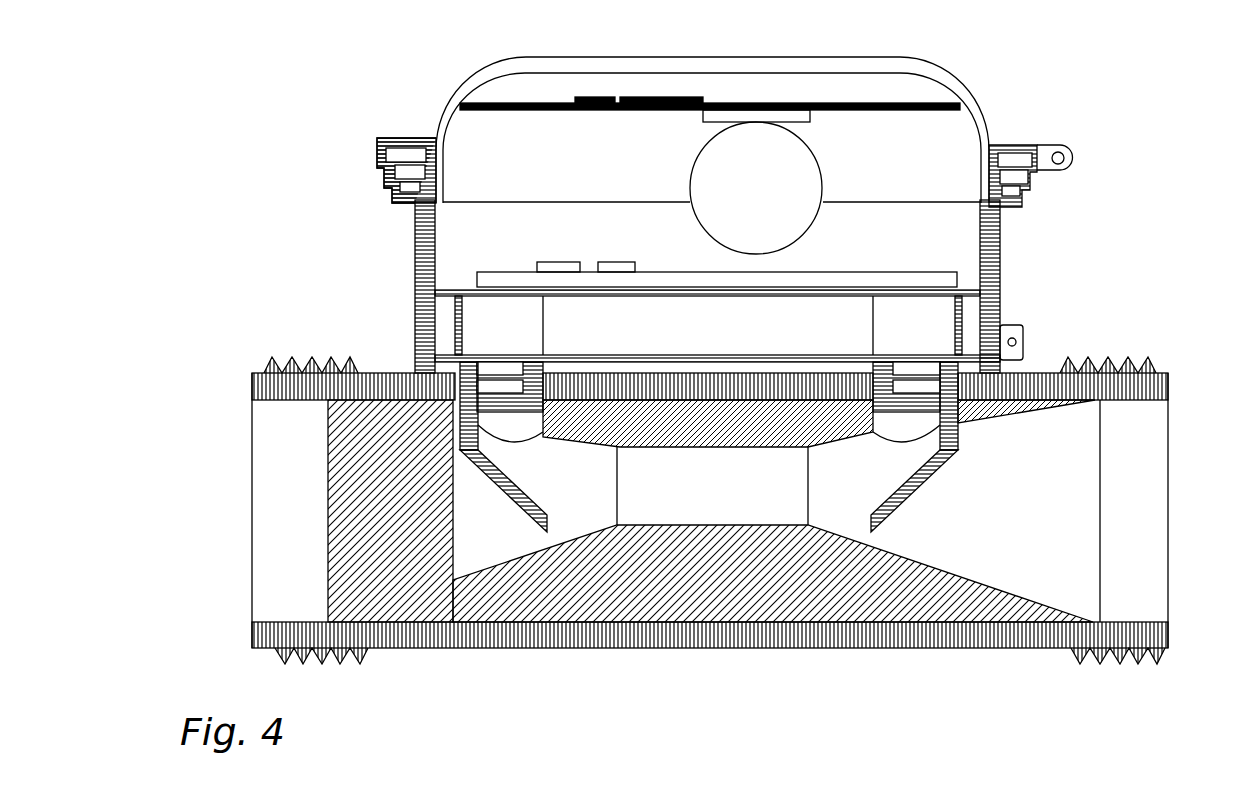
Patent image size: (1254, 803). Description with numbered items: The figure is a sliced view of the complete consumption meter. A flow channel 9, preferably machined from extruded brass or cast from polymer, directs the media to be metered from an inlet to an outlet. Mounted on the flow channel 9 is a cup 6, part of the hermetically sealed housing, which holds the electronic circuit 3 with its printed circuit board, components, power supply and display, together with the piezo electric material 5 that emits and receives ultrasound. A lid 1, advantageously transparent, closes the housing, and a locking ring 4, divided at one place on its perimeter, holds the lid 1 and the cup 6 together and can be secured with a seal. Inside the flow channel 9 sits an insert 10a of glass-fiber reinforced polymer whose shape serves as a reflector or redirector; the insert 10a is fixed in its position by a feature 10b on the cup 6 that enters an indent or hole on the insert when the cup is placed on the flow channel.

The lid 1 is at (442, 95).
The electronic circuit 3 is at (957, 270).
The locking ring 4 is at (1087, 160).
The piezo electric material 5 is at (917, 369).
The cup 6 is at (403, 276).
The flow channel 9 is at (388, 370).
The insert 10a is at (328, 578).
The feature on the cup 10b is at (487, 497).